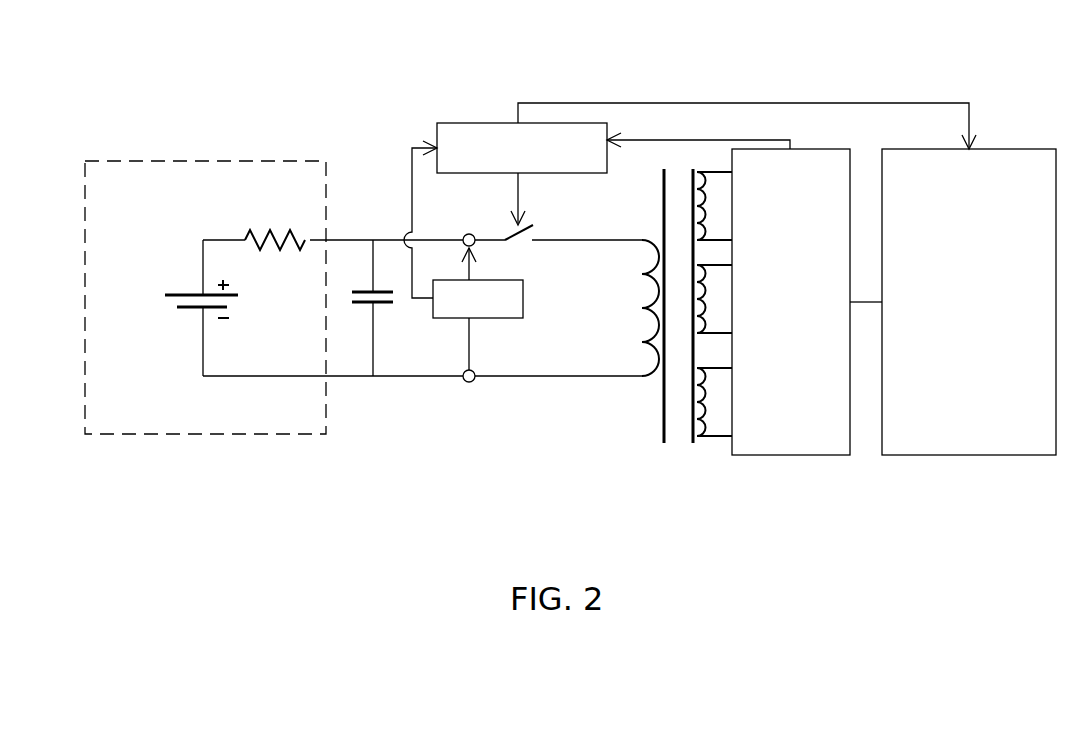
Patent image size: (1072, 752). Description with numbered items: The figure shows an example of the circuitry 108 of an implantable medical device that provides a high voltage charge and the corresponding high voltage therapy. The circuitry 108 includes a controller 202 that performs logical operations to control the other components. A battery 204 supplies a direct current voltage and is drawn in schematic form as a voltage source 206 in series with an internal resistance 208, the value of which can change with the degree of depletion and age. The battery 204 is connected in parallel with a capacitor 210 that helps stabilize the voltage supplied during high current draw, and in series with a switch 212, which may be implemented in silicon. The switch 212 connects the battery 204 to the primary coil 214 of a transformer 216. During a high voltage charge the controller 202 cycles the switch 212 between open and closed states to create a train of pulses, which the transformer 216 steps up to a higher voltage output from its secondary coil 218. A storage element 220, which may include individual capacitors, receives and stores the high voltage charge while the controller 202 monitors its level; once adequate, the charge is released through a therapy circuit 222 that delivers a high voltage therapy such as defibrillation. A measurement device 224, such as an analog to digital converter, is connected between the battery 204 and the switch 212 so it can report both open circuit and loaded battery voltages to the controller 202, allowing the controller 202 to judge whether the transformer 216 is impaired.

The circuitry 108 is at (375, 121).
The controller 202 is at (458, 122).
The battery 204 is at (149, 158).
The voltage source 206 is at (179, 308).
The internal resistance 208 is at (258, 248).
The capacitor 210 is at (380, 304).
The switch 212 is at (522, 243).
The primary coil 214 is at (640, 308).
The transformer 216 is at (645, 410).
The secondary coil 218 is at (706, 437).
The storage element 220 is at (778, 456).
The therapy circuit 222 is at (922, 456).
The measurement device 224 is at (490, 320).